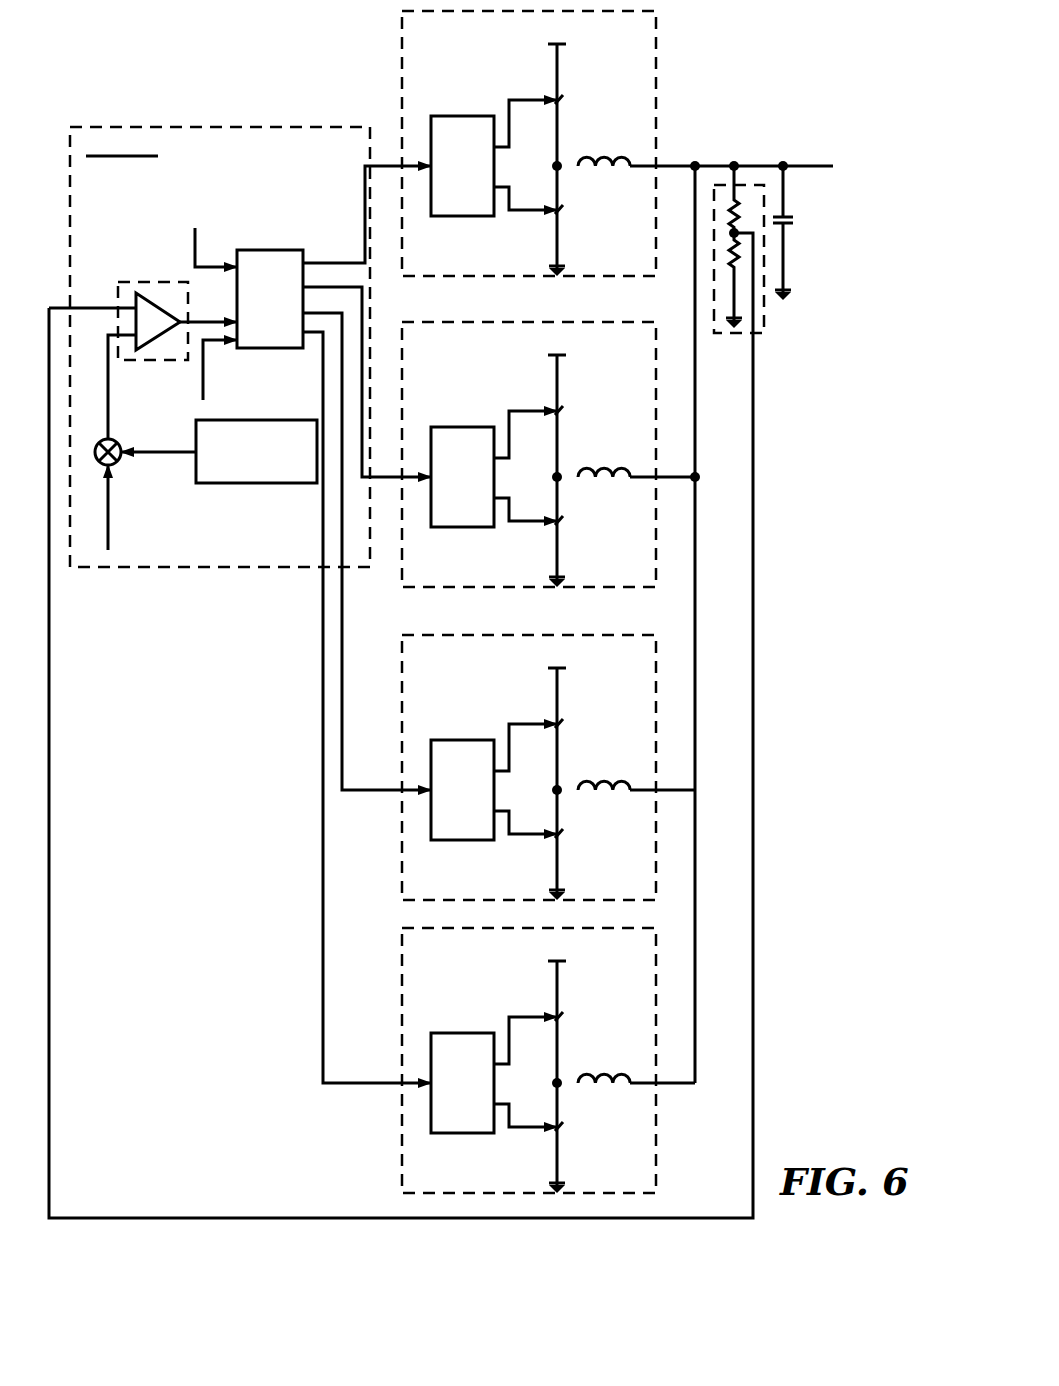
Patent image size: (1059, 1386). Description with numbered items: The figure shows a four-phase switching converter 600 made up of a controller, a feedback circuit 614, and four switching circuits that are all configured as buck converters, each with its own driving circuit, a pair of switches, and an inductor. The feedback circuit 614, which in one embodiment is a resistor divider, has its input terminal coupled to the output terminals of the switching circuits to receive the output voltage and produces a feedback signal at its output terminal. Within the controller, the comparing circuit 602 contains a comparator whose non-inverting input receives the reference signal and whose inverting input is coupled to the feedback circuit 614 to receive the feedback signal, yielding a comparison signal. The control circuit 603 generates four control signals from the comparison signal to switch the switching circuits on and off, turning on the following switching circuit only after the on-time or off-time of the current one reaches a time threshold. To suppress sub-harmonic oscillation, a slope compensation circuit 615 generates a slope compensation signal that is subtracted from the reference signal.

The 4-phase switching converter 600 is at (793, 36).
The comparing circuit 602 is at (165, 362).
The control circuit 603 is at (265, 349).
The feedback circuit 614 is at (743, 335).
The slope compensation circuit 615 is at (226, 484).